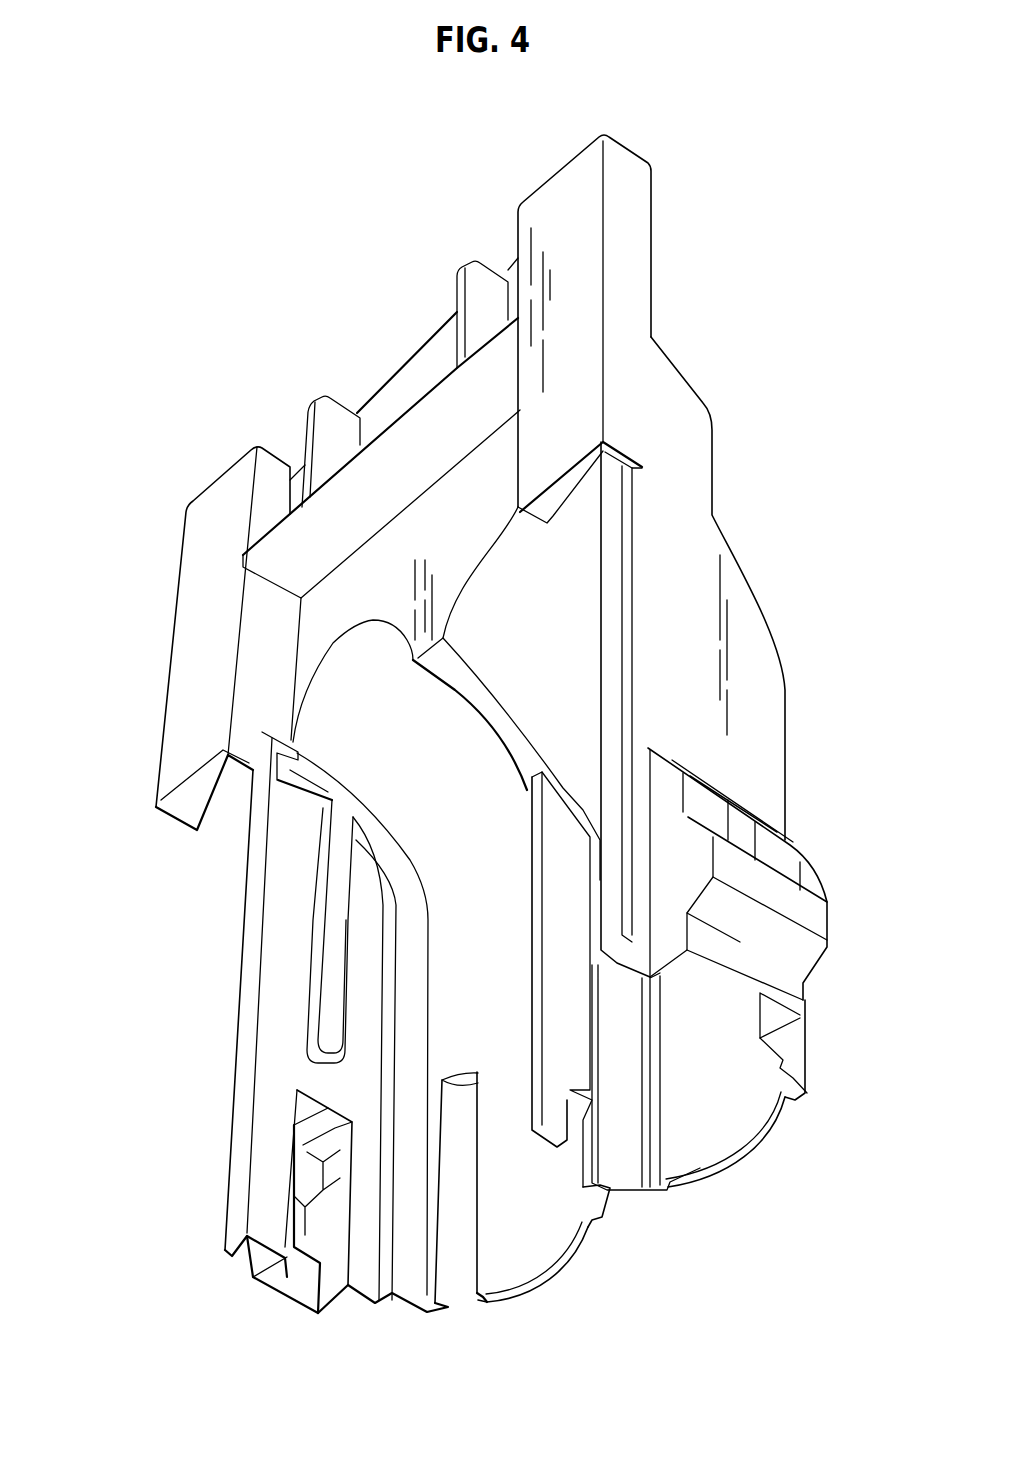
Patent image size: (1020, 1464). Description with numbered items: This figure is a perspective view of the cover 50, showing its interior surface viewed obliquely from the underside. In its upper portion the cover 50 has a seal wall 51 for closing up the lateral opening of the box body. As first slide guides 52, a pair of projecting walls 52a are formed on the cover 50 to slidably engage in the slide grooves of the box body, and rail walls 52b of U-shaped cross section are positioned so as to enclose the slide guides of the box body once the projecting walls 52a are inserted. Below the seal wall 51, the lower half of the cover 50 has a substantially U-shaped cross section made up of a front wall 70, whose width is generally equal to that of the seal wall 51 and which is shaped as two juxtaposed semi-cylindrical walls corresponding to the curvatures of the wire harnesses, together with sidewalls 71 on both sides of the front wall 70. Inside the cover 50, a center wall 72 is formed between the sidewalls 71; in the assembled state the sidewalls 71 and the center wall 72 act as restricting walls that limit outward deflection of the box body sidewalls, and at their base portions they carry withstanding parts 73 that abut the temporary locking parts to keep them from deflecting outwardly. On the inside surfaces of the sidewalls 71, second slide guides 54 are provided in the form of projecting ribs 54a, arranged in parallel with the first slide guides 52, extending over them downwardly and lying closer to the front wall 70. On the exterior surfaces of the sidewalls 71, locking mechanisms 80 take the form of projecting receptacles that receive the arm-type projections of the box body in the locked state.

The cover 50 is at (464, 183).
The seal wall 51 is at (400, 358).
The first slide guide 52 is at (645, 224).
The projecting wall 52a is at (616, 482).
The rail wall 52b is at (573, 298).
The second slide guide 54 is at (315, 975).
The projecting rib 54a is at (318, 932).
The front wall 70 is at (563, 1275).
The sidewall 71 is at (767, 733).
The center wall 72 is at (528, 960).
The withstanding part 73 is at (790, 1100).
The locking mechanism 80 is at (775, 858).